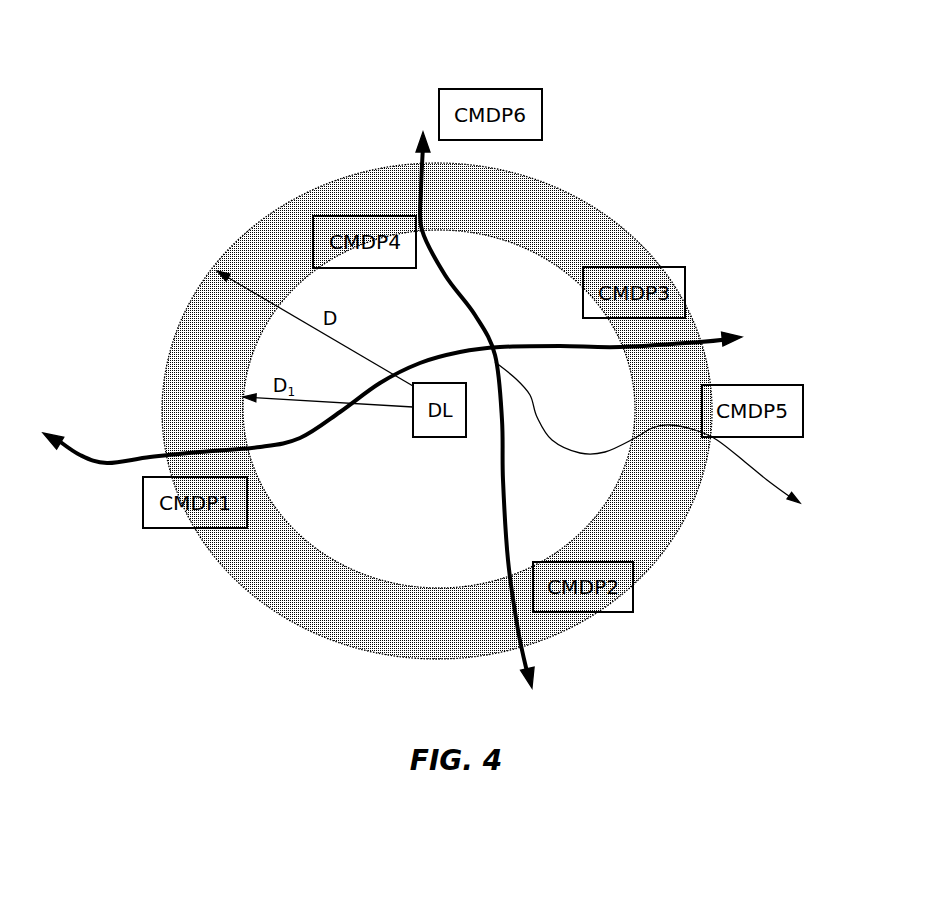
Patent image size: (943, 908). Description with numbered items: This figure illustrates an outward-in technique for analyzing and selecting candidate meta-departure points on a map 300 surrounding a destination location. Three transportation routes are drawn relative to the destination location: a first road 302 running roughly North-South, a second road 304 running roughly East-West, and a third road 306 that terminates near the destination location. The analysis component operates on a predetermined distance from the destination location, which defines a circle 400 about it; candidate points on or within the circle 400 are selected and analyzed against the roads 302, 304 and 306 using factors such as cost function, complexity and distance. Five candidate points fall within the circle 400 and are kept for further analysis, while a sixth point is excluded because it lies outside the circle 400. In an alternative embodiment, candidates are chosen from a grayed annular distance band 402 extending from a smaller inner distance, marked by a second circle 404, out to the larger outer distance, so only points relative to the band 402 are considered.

The map 300 is at (743, 45).
The first road 302 is at (423, 215).
The second road 304 is at (162, 452).
The third road 306 is at (637, 440).
The circle 400 is at (303, 193).
The distance band 402 is at (550, 243).
The second circle 404 is at (303, 540).